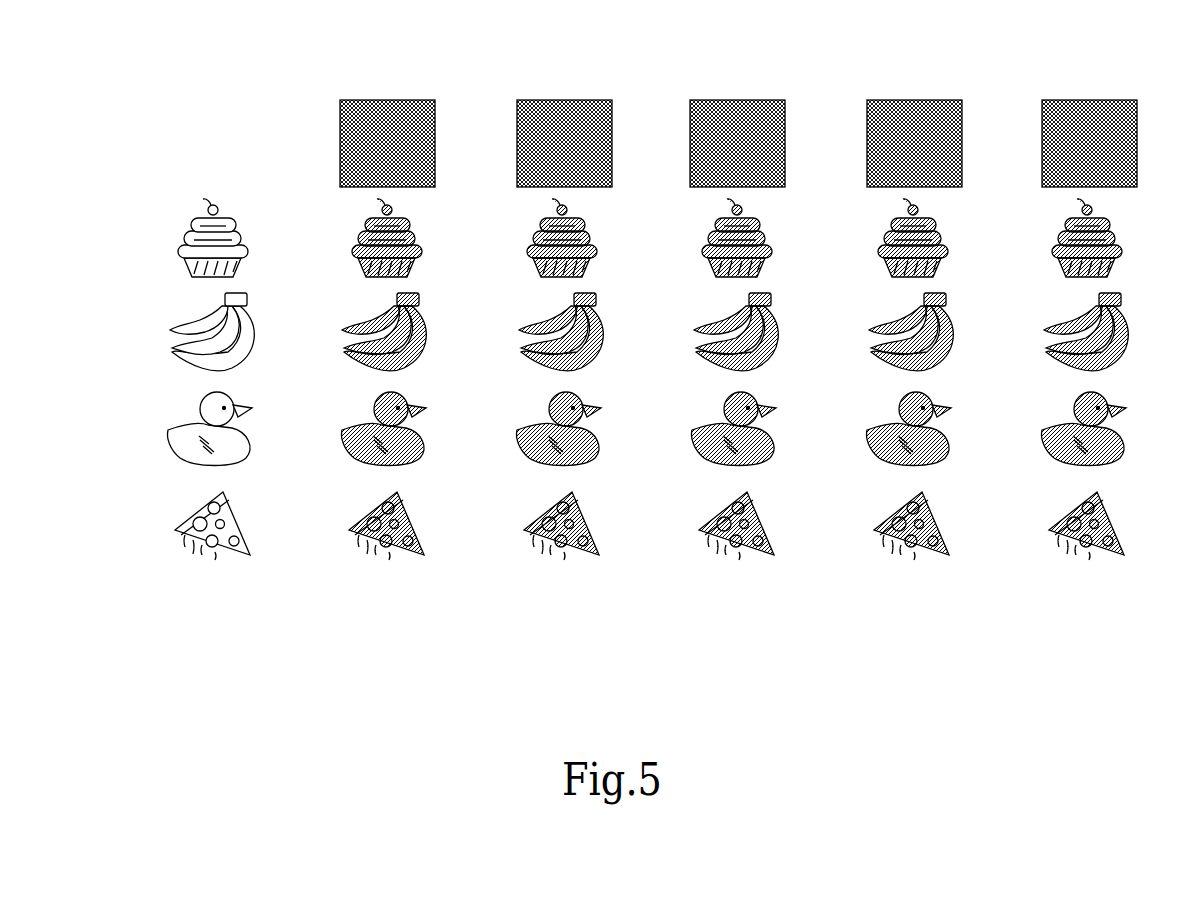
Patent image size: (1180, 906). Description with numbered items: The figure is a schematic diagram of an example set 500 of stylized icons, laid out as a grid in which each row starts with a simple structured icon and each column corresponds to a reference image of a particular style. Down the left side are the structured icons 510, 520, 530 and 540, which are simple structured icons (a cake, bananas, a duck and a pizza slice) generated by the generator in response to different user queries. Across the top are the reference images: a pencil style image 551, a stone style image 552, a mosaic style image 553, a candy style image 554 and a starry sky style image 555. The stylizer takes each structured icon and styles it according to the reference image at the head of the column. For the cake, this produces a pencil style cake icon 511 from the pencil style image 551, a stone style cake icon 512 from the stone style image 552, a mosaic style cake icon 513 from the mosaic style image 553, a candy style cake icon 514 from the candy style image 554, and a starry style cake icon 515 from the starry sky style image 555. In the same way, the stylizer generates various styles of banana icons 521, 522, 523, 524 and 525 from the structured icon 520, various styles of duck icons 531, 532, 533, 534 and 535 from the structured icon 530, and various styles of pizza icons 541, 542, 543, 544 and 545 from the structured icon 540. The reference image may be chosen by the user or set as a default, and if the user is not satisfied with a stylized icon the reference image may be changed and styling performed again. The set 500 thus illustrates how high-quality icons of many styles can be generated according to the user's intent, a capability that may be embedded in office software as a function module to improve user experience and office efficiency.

The set of stylized icons 500 is at (213, 54).
The structured icon 510 is at (196, 230).
The structured icon 520 is at (200, 325).
The structured icon 530 is at (200, 425).
The structured icon 540 is at (195, 515).
The pencil style image 551 is at (405, 101).
The stone style image 552 is at (584, 101).
The mosaic style image 553 is at (757, 101).
The candy style image 554 is at (922, 101).
The starry sky style image 555 is at (1102, 101).
The pencil style cake icon 511 is at (410, 233).
The stone style cake icon 512 is at (587, 233).
The mosaic style cake icon 513 is at (760, 233).
The candy style cake icon 514 is at (928, 232).
The starry style cake icon 515 is at (1107, 233).
The banana icon 521 is at (425, 322).
The banana icon 522 is at (603, 322).
The banana icon 523 is at (775, 322).
The banana icon 524 is at (950, 322).
The banana icon 525 is at (1125, 322).
The duck icon 531 is at (415, 432).
The duck icon 532 is at (593, 432).
The duck icon 533 is at (765, 432).
The duck icon 534 is at (935, 432).
The duck icon 535 is at (1110, 432).
The pizza icon 541 is at (405, 512).
The pizza icon 542 is at (584, 512).
The pizza icon 543 is at (757, 512).
The pizza icon 544 is at (930, 512).
The pizza icon 545 is at (1109, 512).